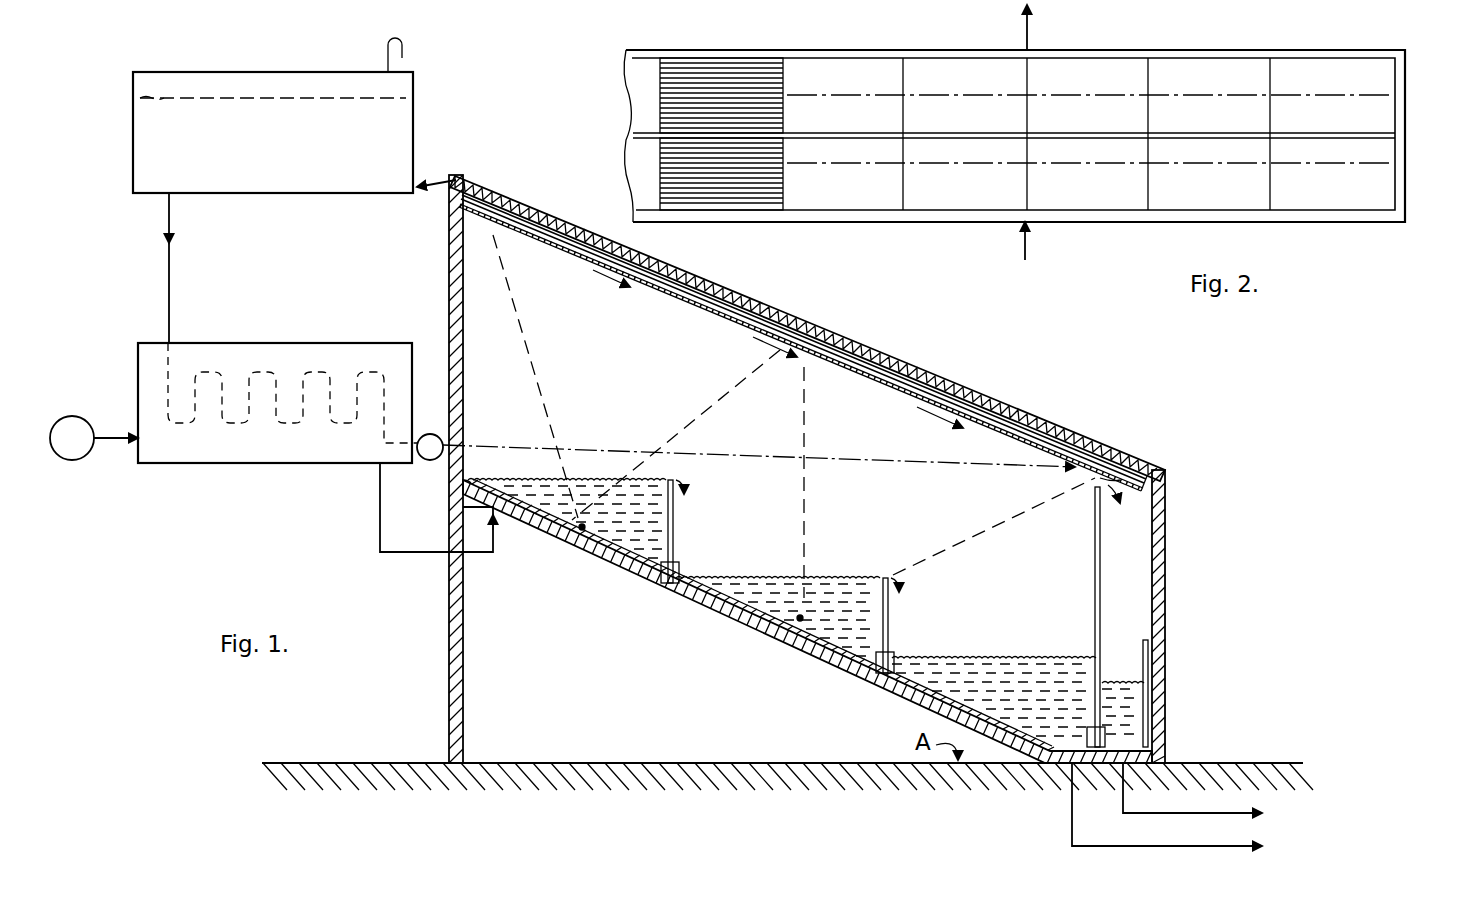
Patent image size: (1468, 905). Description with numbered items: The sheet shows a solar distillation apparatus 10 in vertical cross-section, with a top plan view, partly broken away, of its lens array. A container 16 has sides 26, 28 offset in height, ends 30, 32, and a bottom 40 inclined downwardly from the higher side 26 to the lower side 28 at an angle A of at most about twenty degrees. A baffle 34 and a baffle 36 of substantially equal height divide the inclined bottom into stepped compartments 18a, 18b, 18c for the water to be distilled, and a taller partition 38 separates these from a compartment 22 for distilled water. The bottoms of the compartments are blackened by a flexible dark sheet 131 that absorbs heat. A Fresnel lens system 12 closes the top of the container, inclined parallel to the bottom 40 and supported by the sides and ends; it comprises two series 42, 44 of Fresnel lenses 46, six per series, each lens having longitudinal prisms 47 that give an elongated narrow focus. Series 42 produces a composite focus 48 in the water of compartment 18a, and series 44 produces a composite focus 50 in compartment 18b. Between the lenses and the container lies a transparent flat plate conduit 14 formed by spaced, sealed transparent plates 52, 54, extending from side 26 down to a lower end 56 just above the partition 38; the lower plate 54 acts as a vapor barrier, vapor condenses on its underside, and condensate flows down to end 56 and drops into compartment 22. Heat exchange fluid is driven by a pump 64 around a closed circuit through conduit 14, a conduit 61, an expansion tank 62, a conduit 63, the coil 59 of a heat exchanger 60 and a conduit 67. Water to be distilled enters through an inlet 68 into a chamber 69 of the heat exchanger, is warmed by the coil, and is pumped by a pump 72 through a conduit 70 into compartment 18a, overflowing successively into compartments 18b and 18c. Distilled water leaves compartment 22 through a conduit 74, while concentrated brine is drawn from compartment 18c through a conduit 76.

In FIG. 1, the distillation apparatus 10 is at (1190, 480).
In FIG. 1, the Fresnel lens system 12 is at (842, 329).
In FIG. 2, the Fresnel lens system 12 is at (1106, 237).
In FIG. 1, the transparent flat plate conduit 14 is at (878, 387).
In FIG. 1, the container 16 is at (1185, 552).
In FIG. 1, the compartment 18a is at (548, 477).
In FIG. 1, the compartment 18b is at (775, 542).
In FIG. 1, the compartment 18c is at (1020, 650).
In FIG. 1, the compartment 22 is at (1124, 640).
In FIG. 1, the side 26 is at (448, 283).
In FIG. 1, the side 28 is at (1167, 606).
In FIG. 2, the end 30 is at (1405, 110).
In FIG. 2, the end 32 is at (601, 88).
In FIG. 1, the baffle 34 is at (676, 532).
In FIG. 1, the baffle 36 is at (893, 621).
In FIG. 1, the partition 38 is at (1094, 550).
In FIG. 1, the bottom 40 is at (628, 582).
In FIG. 2, the lens series 42 is at (1365, 84).
In FIG. 2, the lens series 44 is at (1363, 191).
In FIG. 2, the Fresnel lenses 46 is at (702, 62).
In FIG. 1, the prisms 47 is at (692, 292).
In FIG. 1, the composite focus 48 is at (580, 531).
In FIG. 1, the composite focus 50 is at (800, 622).
In FIG. 1, the transparent plate 52 is at (1004, 418).
In FIG. 1, the transparent plate 54 is at (1012, 445).
In FIG. 1, the lower end 56 is at (1118, 479).
In FIG. 1, the coil 59 is at (258, 372).
In FIG. 1, the heat exchanger 60 is at (283, 345).
In FIG. 1, the conduit 61 is at (440, 176).
In FIG. 2, the conduit 61 is at (1032, 33).
In FIG. 1, the expansion tank 62 is at (415, 118).
In FIG. 1, the conduit 63 is at (172, 220).
In FIG. 1, the pump 64 is at (432, 434).
In FIG. 1, the conduit 67 is at (480, 446).
In FIG. 2, the conduit 67 is at (1020, 235).
In FIG. 1, the inlet 68 is at (136, 445).
In FIG. 1, the chamber 69 is at (263, 445).
In FIG. 1, the conduit 70 is at (379, 548).
In FIG. 1, the pump 72 is at (74, 462).
In FIG. 1, the conduit 74 is at (1160, 823).
In FIG. 1, the conduit 76 is at (1160, 856).
In FIG. 1, the flexible dark sheet 131 is at (686, 607).